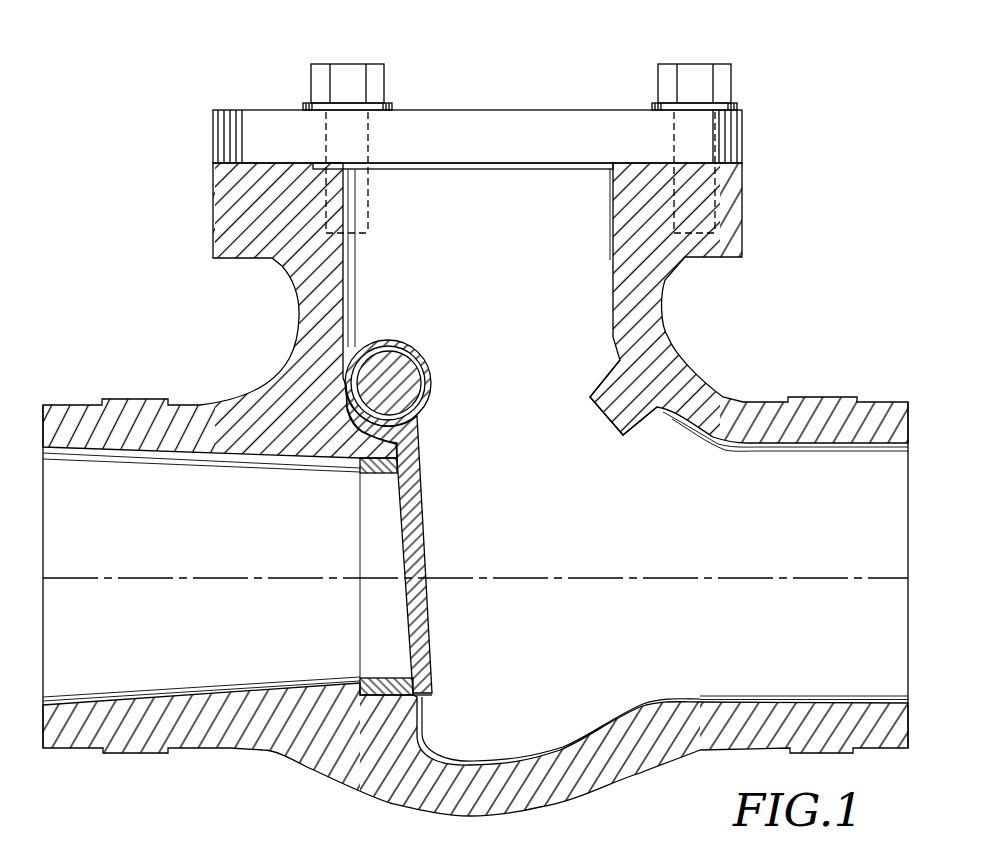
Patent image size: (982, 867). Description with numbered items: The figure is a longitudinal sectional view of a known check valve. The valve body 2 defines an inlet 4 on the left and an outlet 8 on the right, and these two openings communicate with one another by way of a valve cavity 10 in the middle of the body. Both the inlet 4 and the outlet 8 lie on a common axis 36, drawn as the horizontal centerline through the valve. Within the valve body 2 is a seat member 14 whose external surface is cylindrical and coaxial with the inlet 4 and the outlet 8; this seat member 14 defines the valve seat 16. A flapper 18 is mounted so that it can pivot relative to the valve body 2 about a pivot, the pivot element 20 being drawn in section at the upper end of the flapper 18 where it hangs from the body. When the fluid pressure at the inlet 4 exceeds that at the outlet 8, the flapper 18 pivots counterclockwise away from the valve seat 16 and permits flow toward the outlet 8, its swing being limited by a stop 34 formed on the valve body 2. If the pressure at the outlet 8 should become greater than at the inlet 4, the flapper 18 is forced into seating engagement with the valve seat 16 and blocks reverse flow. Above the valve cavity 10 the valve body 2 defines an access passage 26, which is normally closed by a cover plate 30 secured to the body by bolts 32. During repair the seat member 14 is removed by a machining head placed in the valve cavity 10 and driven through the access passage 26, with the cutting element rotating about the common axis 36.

The valve body 2 is at (661, 770).
The inlet 4 is at (43, 590).
The outlet 8 is at (908, 618).
The valve cavity 10 is at (512, 630).
The seat member 14 is at (380, 673).
The valve seat 16 is at (420, 697).
The flapper 18 is at (423, 563).
The hinge pin 20 is at (407, 368).
The access passage 26 is at (517, 320).
The cover plate 30 is at (242, 108).
The bolts 32 is at (385, 80).
The stop 34 is at (610, 430).
The common axis 36 is at (210, 578).